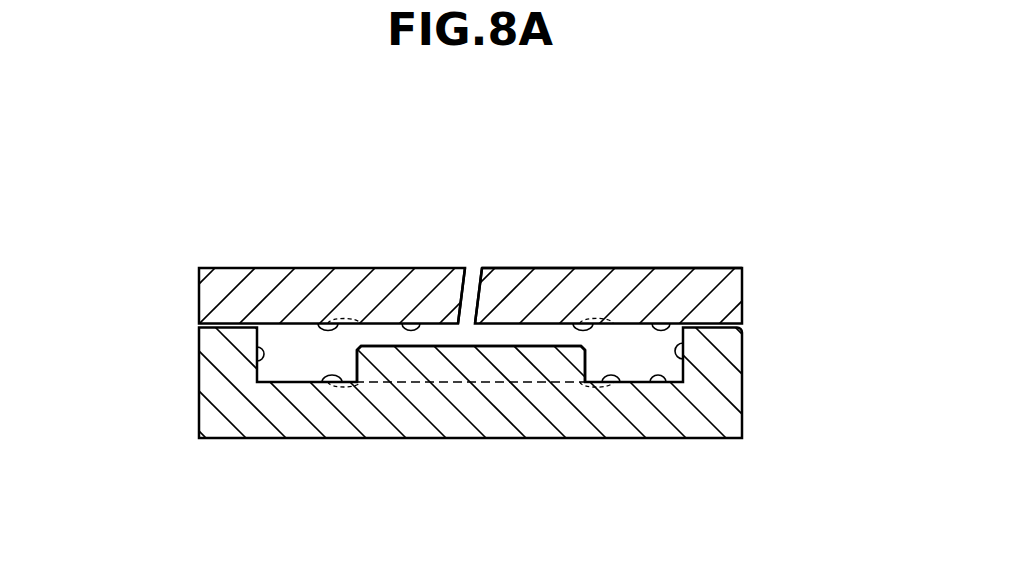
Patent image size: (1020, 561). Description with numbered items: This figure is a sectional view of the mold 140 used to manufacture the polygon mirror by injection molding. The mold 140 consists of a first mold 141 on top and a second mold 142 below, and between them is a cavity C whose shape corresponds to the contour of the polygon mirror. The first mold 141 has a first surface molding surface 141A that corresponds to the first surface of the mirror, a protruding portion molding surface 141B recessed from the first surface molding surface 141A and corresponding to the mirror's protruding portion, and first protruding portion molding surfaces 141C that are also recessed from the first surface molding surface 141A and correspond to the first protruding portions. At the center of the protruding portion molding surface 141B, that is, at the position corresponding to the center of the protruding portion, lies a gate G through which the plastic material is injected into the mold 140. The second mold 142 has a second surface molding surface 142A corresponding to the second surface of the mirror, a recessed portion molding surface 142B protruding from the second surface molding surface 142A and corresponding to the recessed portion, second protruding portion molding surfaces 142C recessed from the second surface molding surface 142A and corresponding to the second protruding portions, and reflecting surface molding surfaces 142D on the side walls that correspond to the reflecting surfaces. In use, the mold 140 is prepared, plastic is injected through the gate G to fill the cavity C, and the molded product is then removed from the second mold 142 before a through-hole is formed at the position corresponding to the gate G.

The mold 140 is at (186, 303).
The first mold 141 is at (260, 268).
The first surface molding surface 141A is at (660, 268).
The protruding portion molding surface 141B is at (402, 323).
The first protruding portion molding surfaces 141C is at (318, 323).
The second mold 142 is at (260, 428).
The second surface molding surface 142A is at (664, 385).
The recessed portion molding surface 142B is at (503, 346).
The second protruding portion molding surfaces 142C is at (323, 383).
The reflecting surface molding surfaces 142D is at (257, 363).
The gate G is at (463, 268).
The cavity C is at (314, 367).